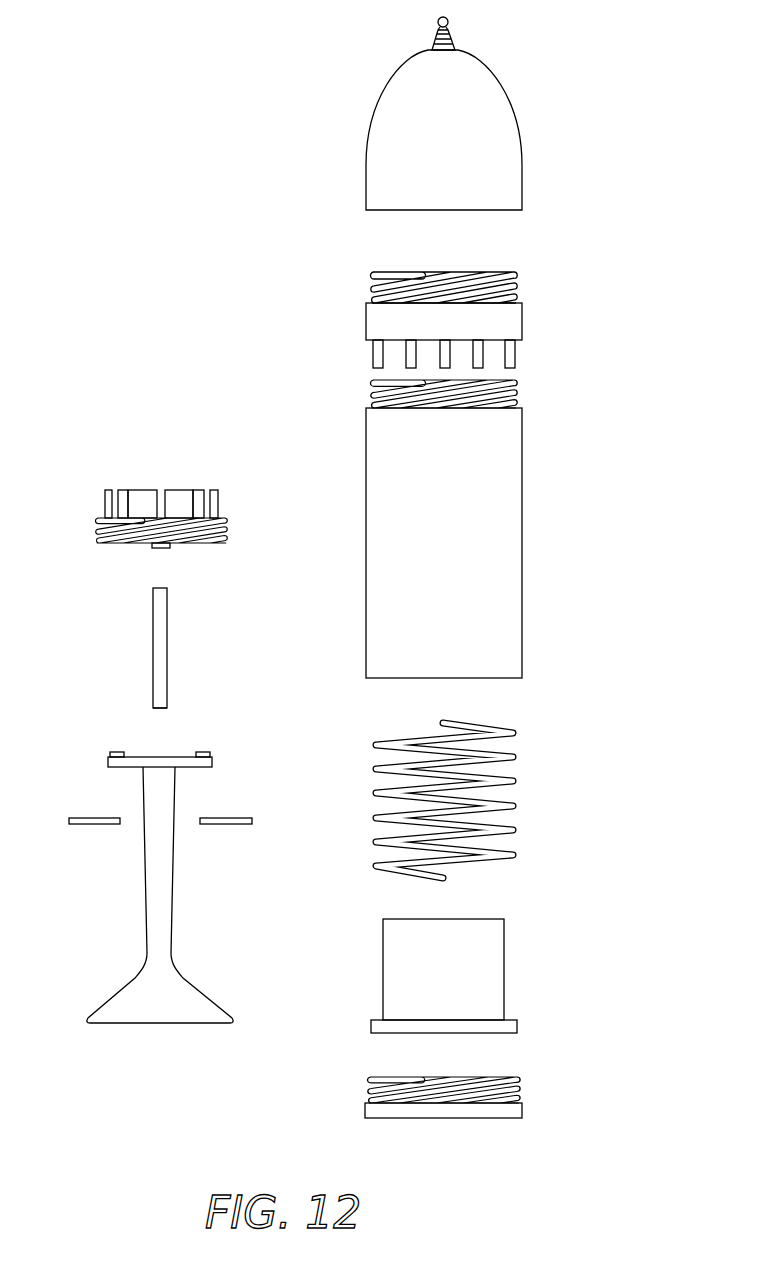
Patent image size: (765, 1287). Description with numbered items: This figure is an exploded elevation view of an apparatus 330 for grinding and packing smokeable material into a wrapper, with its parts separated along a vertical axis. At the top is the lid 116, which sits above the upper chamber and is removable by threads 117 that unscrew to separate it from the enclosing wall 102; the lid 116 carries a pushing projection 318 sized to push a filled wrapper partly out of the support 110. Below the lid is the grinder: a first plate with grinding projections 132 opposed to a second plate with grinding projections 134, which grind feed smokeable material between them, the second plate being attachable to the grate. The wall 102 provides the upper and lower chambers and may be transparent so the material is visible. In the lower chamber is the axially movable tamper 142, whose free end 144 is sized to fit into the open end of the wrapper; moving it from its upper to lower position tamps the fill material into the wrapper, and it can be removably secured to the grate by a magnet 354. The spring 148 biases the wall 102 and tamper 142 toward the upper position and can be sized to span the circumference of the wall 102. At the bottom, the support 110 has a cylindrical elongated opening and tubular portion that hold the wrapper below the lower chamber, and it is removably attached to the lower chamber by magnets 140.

The wall 102 is at (522, 545).
The support 110 is at (145, 880).
The lid 116 is at (507, 157).
The threads 117 is at (516, 290).
The first plate with grinding projections 132 is at (520, 352).
The second plate with grinding projections 134 is at (103, 505).
The magnets 140 is at (110, 755).
The tamper 142 is at (153, 650).
The free end 144 is at (167, 708).
The spring 148 is at (517, 781).
The pushing projection 318 is at (448, 20).
The assembly 330 is at (576, 56).
The magnet 354 is at (160, 548).